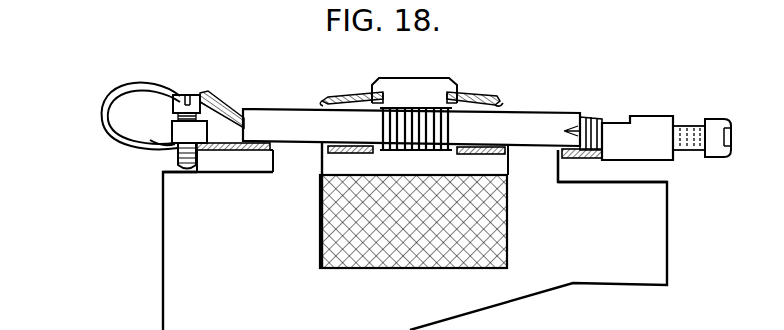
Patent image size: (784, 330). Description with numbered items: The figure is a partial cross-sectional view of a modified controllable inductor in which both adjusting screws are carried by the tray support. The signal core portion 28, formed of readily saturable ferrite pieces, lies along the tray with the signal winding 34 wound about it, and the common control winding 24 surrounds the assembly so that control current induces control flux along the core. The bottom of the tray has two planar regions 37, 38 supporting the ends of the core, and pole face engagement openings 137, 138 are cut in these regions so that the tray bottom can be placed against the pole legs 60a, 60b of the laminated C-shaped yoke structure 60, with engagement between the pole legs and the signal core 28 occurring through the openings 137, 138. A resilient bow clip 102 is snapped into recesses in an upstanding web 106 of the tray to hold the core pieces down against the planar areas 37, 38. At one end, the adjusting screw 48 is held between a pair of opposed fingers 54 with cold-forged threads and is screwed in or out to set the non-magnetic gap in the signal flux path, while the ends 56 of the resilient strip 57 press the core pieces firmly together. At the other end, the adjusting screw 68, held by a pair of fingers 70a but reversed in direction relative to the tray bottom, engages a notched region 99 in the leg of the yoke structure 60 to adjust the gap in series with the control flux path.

The control winding 24 is at (420, 240).
The signal core portion 28 is at (283, 102).
The signal winding 34 is at (383, 122).
The planar region 37 is at (322, 193).
The planar region 38 is at (493, 165).
The adjusting screw 48 is at (718, 120).
The fingers 54 is at (648, 122).
The ends of resilient strip 56 is at (252, 124).
The resilient strip 57 is at (100, 113).
The yoke structure 60 is at (418, 312).
The pole leg 60a is at (320, 167).
The pole leg 60b is at (548, 176).
The adjusting screw 68 is at (161, 97).
The fingers 70a is at (172, 128).
The notched region 99 is at (203, 168).
The resilient bow clip 102 is at (489, 98).
The upstanding web 106 is at (427, 86).
The pole face engagement opening 137 is at (278, 155).
The pole face engagement opening 138 is at (562, 162).